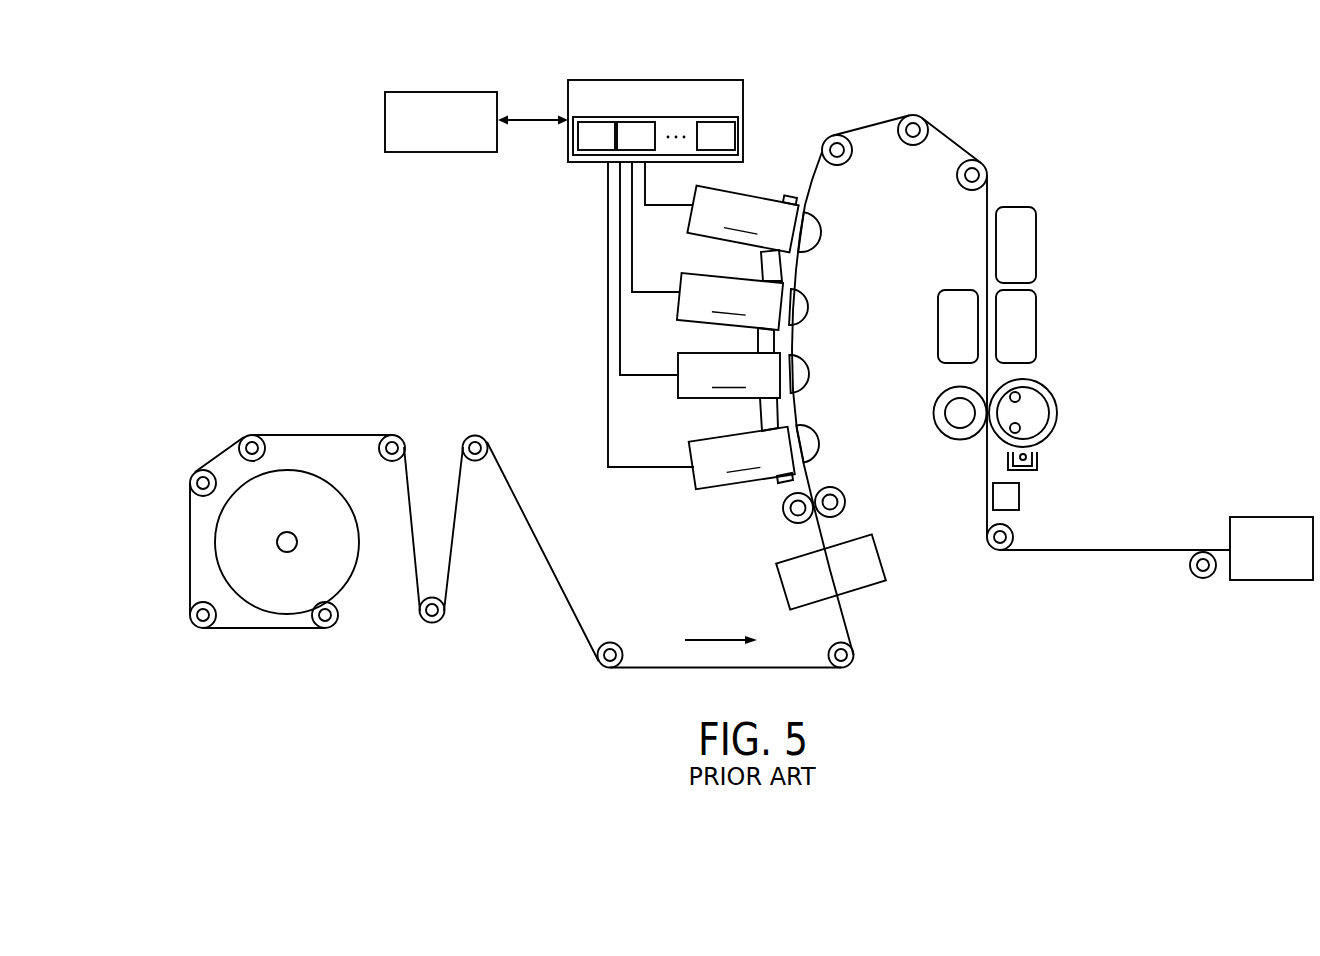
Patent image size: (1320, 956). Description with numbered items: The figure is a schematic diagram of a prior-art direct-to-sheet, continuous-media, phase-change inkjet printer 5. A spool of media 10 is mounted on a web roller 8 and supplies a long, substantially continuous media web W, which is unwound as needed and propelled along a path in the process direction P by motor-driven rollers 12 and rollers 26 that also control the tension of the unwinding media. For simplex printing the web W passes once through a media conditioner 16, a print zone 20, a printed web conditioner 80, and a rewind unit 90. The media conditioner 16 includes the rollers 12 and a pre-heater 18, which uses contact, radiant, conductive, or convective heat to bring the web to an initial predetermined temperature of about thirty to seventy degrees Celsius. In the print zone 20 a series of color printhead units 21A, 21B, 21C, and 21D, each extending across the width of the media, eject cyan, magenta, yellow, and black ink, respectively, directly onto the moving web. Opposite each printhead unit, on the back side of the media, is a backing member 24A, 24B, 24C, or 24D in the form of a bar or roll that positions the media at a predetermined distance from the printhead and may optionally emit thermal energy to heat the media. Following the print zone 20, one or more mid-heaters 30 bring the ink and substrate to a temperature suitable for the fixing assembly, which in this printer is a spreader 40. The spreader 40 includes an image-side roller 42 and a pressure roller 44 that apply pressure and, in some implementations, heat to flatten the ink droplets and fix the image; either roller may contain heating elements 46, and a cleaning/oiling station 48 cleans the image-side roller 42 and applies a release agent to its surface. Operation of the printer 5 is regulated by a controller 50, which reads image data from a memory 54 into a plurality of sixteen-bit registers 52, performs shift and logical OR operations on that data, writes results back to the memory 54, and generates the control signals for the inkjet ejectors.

The inkjet printer 5 is at (448, 263).
The web roller 8 is at (287, 552).
The spool of media 10 is at (343, 498).
The rollers 12 is at (479, 462).
The media conditioner 16 is at (614, 580).
The pre-heater 18 is at (885, 545).
The print zone 20 is at (588, 398).
The printhead unit 21A is at (742, 458).
The printhead unit 21B is at (729, 392).
The printhead unit 21C is at (730, 313).
The printhead unit 21D is at (743, 230).
The backing member 24A is at (819, 444).
The backing member 24B is at (807, 374).
The backing member 24C is at (808, 307).
The backing member 24D is at (821, 237).
The rollers 26 is at (847, 160).
The mid-heater 30 is at (961, 290).
The spreader 40 is at (1064, 349).
The image-side roller 42 is at (1045, 388).
The pressure roller 44 is at (959, 421).
The heating elements 46 is at (1020, 397).
The cleaning/oiling station 48 is at (1040, 463).
The controller 50 is at (568, 95).
The registers 52 is at (727, 117).
The memory 54 is at (385, 122).
The printed web conditioner 80 is at (965, 548).
The rewind unit 90 is at (1272, 516).
The media web W is at (343, 432).
The process direction P is at (712, 640).